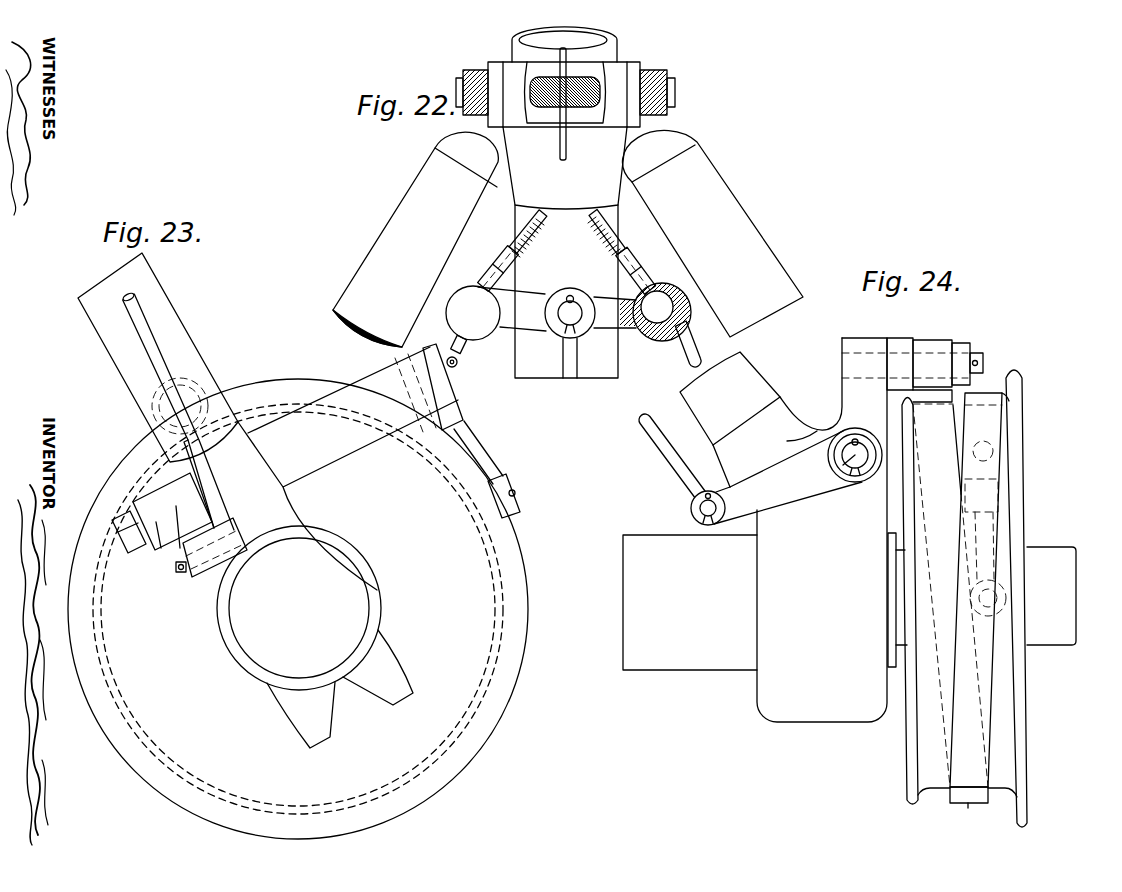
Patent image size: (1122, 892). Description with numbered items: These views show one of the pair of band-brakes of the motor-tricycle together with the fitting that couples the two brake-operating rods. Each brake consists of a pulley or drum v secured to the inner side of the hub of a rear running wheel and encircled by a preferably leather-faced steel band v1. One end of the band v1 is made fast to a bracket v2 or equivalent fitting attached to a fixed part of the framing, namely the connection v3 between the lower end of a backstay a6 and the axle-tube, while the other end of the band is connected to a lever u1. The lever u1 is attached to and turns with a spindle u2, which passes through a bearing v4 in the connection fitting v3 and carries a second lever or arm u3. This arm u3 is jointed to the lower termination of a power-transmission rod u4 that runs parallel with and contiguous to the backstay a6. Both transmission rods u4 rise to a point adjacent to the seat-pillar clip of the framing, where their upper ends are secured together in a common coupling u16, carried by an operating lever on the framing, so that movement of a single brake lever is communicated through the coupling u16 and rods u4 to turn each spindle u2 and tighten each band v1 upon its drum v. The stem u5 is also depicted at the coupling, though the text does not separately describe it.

In FIG. 22, the backstays a6 is at (568, 238).
In FIG. 23, the backstays a6 is at (195, 360).
In FIG. 24, the backstays a6 is at (747, 363).
In FIG. 23, the lever u1 is at (460, 423).
In FIG. 23, the spindle u2 is at (124, 551).
In FIG. 24, the spindle u2 is at (843, 464).
In FIG. 23, the second lever or arm u3 is at (182, 545).
In FIG. 24, the second lever or arm u3 is at (797, 490).
In FIG. 22, the power-transmission rod u4 is at (687, 343).
In FIG. 23, the power-transmission rod u4 is at (142, 328).
In FIG. 24, the power-transmission rod u4 is at (662, 443).
In FIG. 22, the stem u5 is at (570, 355).
In FIG. 22, the coupling u16 is at (530, 310).
In FIG. 23, the pulley or drum v is at (298, 609).
In FIG. 24, the pulley or drum v is at (928, 555).
In FIG. 23, the band v1 is at (493, 572).
In FIG. 24, the band v1 is at (990, 530).
In FIG. 24, the bracket v2 is at (905, 343).
In FIG. 24, the connection v3 is at (790, 415).
In FIG. 23, the bearing v4 is at (348, 468).